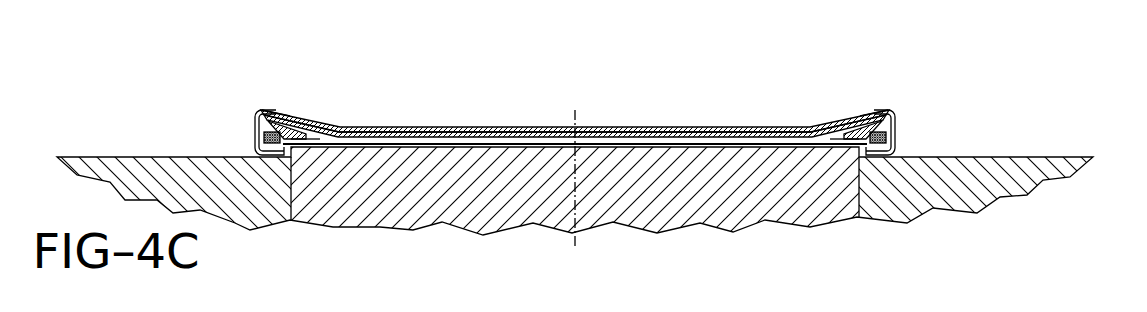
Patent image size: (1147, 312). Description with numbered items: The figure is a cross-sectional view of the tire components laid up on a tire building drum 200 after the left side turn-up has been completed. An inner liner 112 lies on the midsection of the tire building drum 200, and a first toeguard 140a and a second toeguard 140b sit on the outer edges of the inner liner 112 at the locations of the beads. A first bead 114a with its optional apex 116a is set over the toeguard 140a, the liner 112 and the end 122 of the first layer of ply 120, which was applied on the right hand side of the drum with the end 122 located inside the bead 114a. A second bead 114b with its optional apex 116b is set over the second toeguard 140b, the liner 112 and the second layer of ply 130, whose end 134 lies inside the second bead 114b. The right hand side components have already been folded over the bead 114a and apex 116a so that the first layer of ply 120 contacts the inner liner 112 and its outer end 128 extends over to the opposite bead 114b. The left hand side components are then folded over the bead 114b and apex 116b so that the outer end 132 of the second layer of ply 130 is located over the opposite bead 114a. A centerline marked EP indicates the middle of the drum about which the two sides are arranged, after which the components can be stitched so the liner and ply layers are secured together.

The inner liner 112 is at (508, 141).
The first bead 114a is at (888, 138).
The second bead 114b is at (262, 138).
The first apex 116a is at (863, 128).
The second apex 116b is at (287, 128).
The first layer of ply 120 is at (680, 125).
The first ply end 122 is at (842, 145).
The second end of first ply layer 128 is at (270, 110).
The second layer of ply 130 is at (410, 124).
The second end of second ply layer 132 is at (880, 110).
The first end of second ply layer 134 is at (308, 145).
The first toeguard 140a is at (894, 150).
The second toeguard 140b is at (256, 150).
The tire building drum 200 is at (480, 238).
The edge plane centerline EP is at (576, 182).